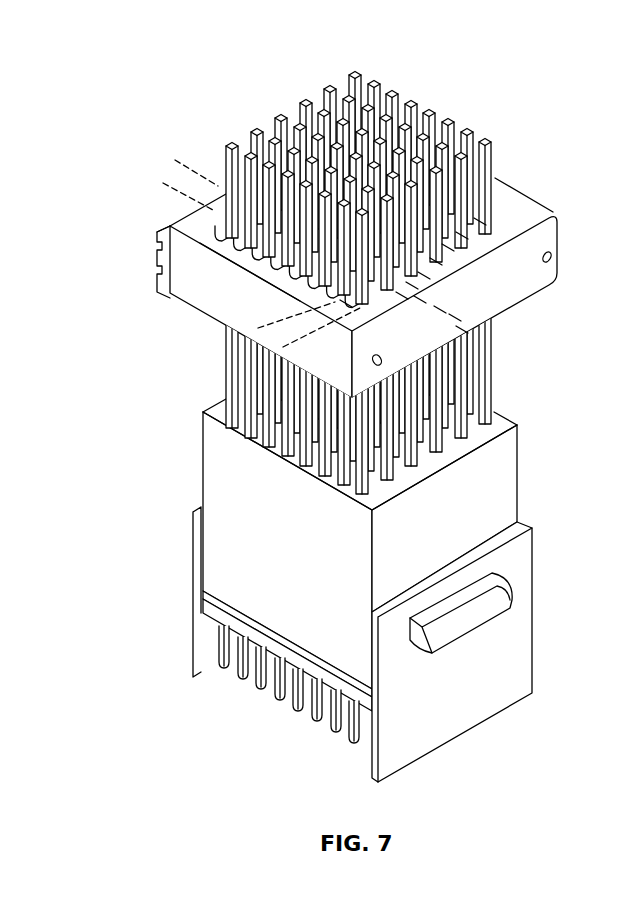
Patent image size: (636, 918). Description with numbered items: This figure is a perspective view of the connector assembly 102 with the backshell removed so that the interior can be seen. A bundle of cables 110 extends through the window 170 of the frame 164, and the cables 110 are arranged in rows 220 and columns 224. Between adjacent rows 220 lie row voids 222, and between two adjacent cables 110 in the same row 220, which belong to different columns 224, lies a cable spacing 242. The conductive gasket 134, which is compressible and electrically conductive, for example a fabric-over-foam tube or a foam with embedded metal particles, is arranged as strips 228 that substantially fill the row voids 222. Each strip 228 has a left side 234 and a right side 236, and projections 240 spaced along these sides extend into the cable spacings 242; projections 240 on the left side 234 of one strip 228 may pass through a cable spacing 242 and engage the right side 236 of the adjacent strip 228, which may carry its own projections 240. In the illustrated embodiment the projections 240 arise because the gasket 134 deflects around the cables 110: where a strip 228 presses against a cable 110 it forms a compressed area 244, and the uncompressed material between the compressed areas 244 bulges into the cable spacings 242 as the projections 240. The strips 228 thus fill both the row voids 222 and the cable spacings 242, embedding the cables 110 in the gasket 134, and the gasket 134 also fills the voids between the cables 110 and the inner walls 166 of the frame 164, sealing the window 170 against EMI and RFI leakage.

The connector assembly 102 is at (470, 76).
The cables 110 is at (476, 205).
The conductive gasket 134 is at (220, 214).
The frame 164 is at (187, 292).
The inner walls 166 is at (176, 226).
The window 170 is at (237, 239).
The rows 220 is at (272, 326).
The row voids 222 is at (338, 302).
The columns 224 is at (199, 170).
The strips 228 is at (480, 222).
The left side 234 is at (424, 276).
The right side 236 is at (462, 236).
The projections 240 is at (402, 296).
The cable spacings 242 is at (455, 318).
The compressed areas 244 is at (412, 286).